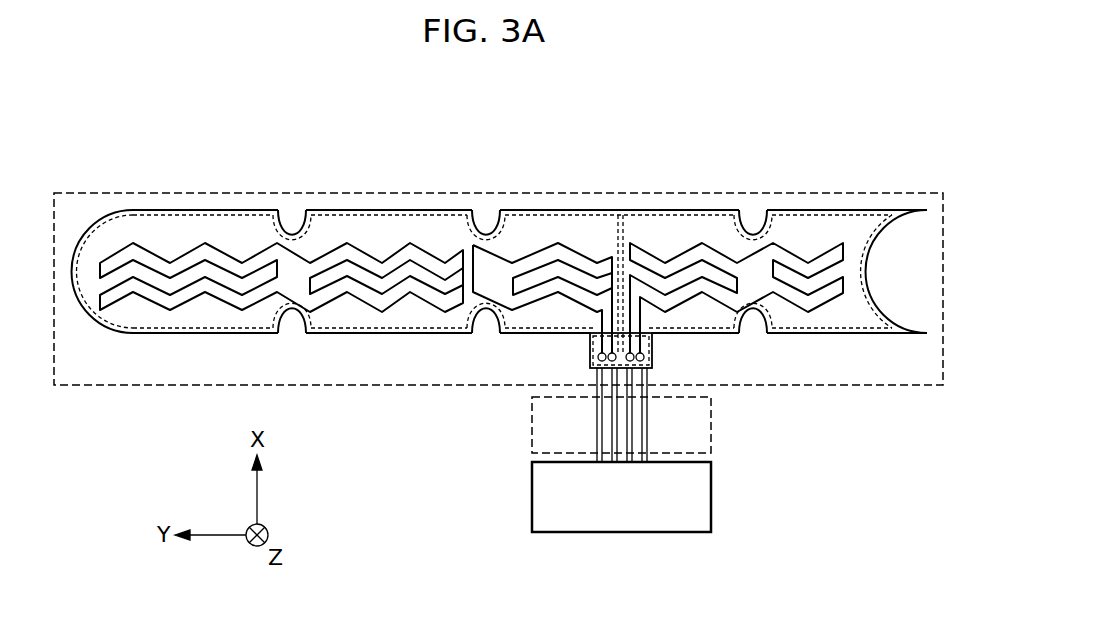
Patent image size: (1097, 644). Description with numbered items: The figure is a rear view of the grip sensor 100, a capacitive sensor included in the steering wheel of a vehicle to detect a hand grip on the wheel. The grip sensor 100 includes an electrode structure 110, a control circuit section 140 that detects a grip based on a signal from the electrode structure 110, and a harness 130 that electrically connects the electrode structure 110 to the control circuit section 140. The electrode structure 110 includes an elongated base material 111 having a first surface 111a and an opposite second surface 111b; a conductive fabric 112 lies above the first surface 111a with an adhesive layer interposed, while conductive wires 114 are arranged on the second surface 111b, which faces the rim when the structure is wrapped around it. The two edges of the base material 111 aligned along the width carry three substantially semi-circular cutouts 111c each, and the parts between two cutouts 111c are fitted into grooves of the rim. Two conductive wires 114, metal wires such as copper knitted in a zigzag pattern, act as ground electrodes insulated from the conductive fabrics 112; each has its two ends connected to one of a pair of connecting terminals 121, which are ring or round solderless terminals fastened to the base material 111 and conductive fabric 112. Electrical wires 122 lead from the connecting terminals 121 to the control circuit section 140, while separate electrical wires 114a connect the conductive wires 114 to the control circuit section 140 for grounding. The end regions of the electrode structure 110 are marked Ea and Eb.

The grip sensor 100 is at (873, 152).
The electrode structure 110 is at (913, 191).
The base material 111 is at (194, 210).
The first surface 111a is at (570, 212).
The second surface 111b is at (620, 212).
The cutouts 111c is at (292, 233).
The conductive fabric 112 is at (491, 271).
The conductive wires 114 is at (408, 250).
The electrical wires 114a is at (648, 438).
The connecting terminals 121 is at (597, 357).
The electrical wires 122 is at (597, 400).
The harness 130 is at (713, 446).
The control circuit section 140 is at (712, 503).
The first end Ea is at (75, 242).
The second end Eb is at (868, 273).